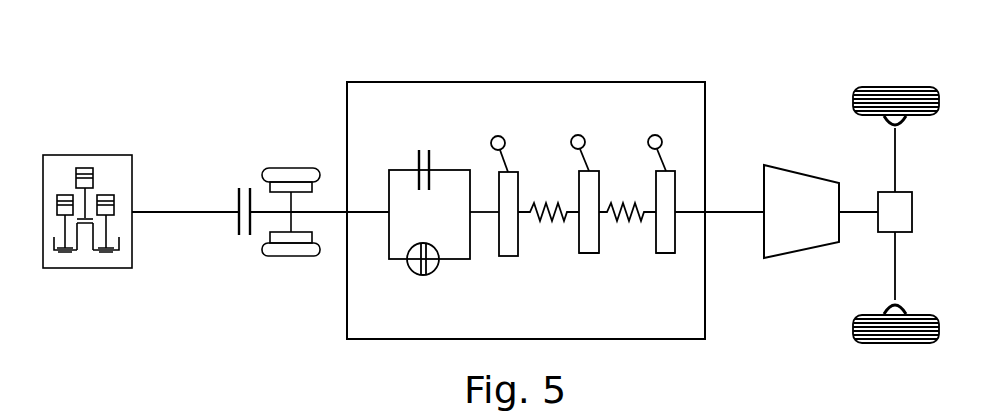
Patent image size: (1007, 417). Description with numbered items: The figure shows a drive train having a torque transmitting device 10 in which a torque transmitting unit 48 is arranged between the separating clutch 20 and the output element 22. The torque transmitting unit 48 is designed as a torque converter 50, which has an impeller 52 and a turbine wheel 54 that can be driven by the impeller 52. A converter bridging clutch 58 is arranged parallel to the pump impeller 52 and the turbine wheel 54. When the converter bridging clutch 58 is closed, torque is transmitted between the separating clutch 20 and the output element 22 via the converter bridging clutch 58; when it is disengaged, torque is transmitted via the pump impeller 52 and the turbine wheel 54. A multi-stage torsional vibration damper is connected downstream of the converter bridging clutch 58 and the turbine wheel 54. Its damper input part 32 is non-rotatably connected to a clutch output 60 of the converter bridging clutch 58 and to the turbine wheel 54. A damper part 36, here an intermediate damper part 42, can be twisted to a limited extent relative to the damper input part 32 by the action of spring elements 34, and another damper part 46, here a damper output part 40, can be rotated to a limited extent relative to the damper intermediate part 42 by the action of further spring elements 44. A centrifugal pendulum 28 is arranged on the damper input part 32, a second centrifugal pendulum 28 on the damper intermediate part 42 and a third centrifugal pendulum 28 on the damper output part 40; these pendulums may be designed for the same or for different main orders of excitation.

The torque transmitting device 10 is at (560, 74).
The separating clutch 20 is at (232, 195).
The output element 22 is at (785, 162).
The centrifugal pendulum 28 is at (509, 149).
The damper input part 32 is at (489, 253).
The spring elements 34 is at (545, 222).
The damper part 36 is at (583, 229).
The damper output part 40 is at (662, 231).
The intermediate damper part 42 is at (586, 256).
The further spring elements 44 is at (622, 225).
The damper part 46 is at (664, 246).
The torque transmitting unit 48 is at (499, 75).
The torque converter 50 is at (467, 82).
The impeller 52 is at (406, 272).
The turbine wheel 54 is at (437, 270).
The converter bridging clutch 58 is at (414, 152).
The clutch output 60 is at (432, 149).